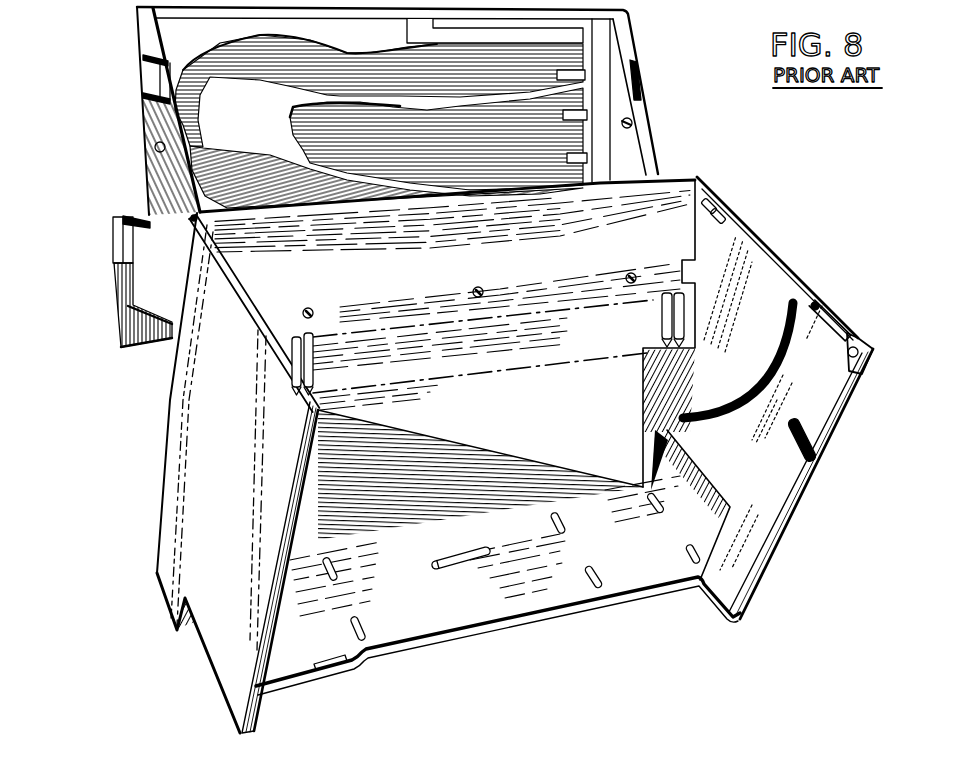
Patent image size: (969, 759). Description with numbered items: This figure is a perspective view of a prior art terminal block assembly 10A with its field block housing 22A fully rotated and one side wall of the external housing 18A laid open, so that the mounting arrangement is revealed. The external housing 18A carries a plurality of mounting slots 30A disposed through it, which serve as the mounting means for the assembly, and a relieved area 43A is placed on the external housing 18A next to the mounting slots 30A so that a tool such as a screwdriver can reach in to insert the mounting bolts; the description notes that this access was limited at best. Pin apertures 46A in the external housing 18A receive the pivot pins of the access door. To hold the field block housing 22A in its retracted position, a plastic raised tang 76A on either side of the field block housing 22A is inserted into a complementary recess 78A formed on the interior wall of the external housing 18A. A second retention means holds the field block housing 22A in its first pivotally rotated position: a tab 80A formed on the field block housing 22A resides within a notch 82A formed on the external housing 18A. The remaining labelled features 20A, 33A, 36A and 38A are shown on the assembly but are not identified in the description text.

The prior art terminal block assembly 10A is at (805, 148).
The external housing 18A is at (212, 545).
The notch 20A is at (178, 632).
The field block housing 22A is at (395, 224).
The mounting slots 30A is at (651, 508).
The fastener button 33A is at (627, 277).
The shelf slot 36A is at (583, 30).
The curved dish member 38A is at (185, 33).
The relieved area 43A is at (716, 508).
The pin apertures 46A is at (858, 364).
The raised tangs 76A is at (118, 265).
The recesses 78A is at (815, 443).
The tab 80A is at (152, 82).
The notch 82A is at (294, 368).